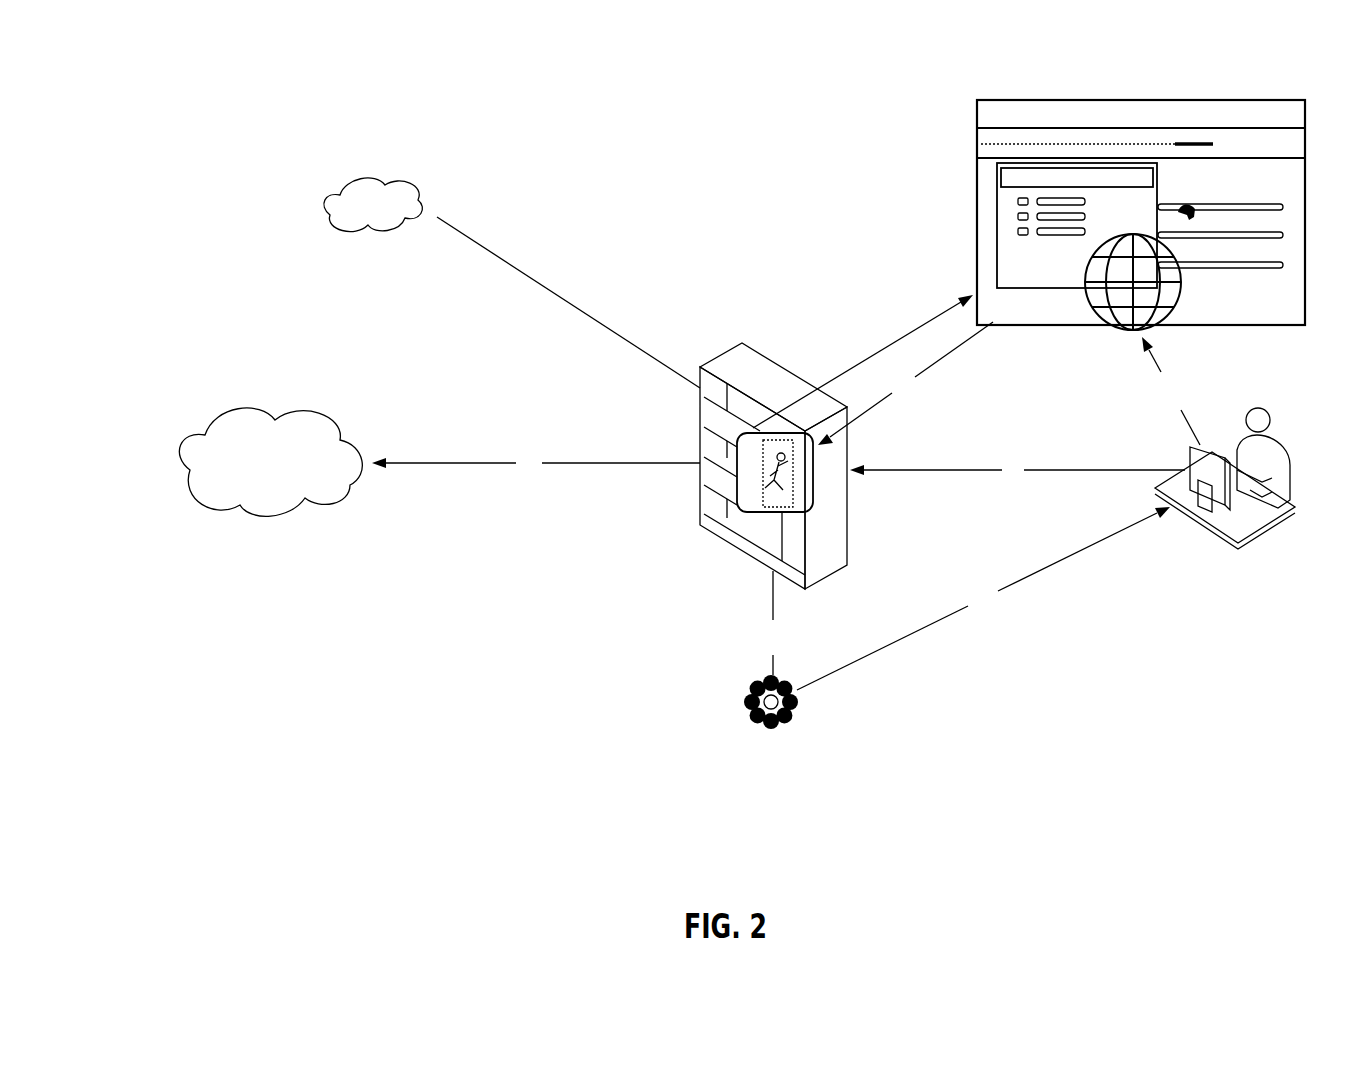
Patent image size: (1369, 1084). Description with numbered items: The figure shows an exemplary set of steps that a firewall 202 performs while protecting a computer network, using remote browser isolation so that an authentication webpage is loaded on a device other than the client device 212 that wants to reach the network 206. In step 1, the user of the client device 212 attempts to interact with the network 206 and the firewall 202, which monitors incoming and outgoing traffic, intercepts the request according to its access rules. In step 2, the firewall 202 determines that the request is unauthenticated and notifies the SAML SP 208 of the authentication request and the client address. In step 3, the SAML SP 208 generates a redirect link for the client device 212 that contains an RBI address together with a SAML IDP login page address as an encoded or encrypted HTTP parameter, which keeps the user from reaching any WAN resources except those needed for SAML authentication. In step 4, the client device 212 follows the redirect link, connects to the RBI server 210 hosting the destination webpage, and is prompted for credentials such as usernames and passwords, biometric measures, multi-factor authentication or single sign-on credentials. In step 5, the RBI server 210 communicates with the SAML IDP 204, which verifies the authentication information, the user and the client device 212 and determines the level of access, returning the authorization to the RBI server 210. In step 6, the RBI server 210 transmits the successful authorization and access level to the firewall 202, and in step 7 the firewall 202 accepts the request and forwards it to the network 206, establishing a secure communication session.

The firewall 202 is at (700, 512).
The SAML IDP 204 is at (325, 210).
The network 206 is at (175, 478).
The SAML SP 208 is at (743, 696).
The RBI server 210 is at (977, 108).
The client device 212 is at (1235, 543).
The step 1 is at (1017, 473).
The step 2 is at (772, 623).
The step 3 is at (983, 598).
The step 4 is at (1171, 391).
The step 5 is at (568, 302).
The step 6 is at (905, 383).
The step 7 is at (536, 466).